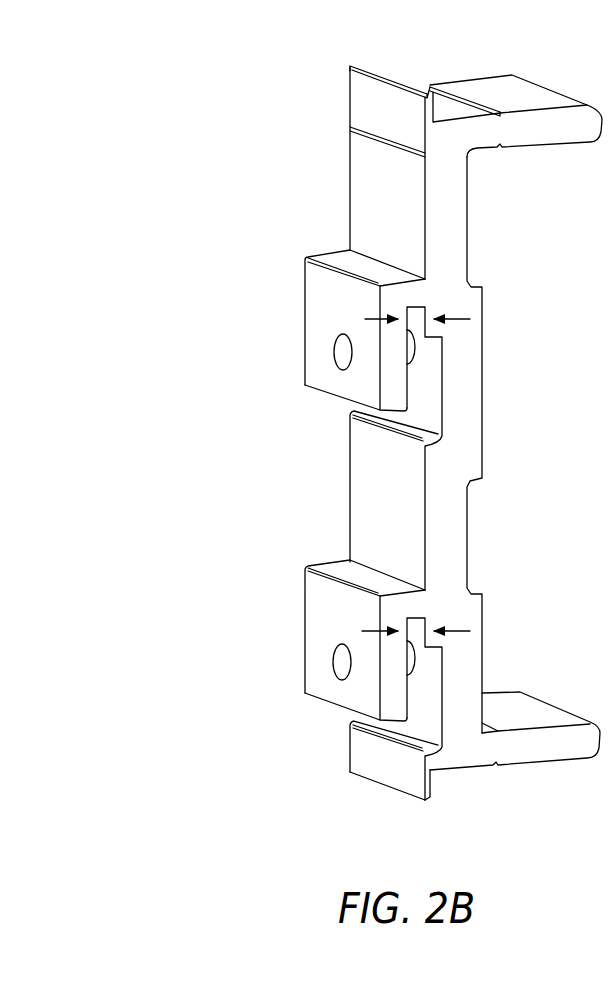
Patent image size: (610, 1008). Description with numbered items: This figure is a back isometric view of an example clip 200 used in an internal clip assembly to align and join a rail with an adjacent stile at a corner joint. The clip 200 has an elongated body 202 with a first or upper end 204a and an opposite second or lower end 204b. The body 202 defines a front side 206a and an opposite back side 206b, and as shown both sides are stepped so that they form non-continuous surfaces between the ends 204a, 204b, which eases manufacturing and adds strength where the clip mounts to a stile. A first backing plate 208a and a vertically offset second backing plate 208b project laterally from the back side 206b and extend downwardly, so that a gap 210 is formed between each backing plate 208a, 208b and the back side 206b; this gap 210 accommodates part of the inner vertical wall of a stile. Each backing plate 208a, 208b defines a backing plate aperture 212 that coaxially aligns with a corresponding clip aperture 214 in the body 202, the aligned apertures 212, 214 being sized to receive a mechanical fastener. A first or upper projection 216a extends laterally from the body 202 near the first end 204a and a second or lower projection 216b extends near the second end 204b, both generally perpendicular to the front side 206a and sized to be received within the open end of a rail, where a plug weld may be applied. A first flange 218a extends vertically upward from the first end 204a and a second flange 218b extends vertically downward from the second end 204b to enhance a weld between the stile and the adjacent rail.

The clip 200 is at (275, 121).
The elongated body 202 is at (345, 202).
The first end 204a is at (405, 74).
The second end 204b is at (366, 785).
The front side 206a is at (468, 217).
The back side 206b is at (365, 510).
The first backing plate 208a is at (320, 373).
The second backing plate 208b is at (318, 678).
The gap 210 is at (460, 317).
The backing plate aperture 212 is at (338, 352).
The clip aperture 214 is at (418, 350).
The first projection 216a is at (540, 97).
The second projection 216b is at (540, 710).
The first flange 218a is at (367, 67).
The second flange 218b is at (430, 788).